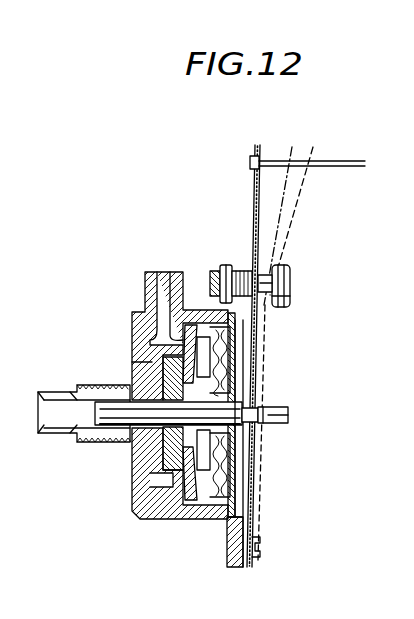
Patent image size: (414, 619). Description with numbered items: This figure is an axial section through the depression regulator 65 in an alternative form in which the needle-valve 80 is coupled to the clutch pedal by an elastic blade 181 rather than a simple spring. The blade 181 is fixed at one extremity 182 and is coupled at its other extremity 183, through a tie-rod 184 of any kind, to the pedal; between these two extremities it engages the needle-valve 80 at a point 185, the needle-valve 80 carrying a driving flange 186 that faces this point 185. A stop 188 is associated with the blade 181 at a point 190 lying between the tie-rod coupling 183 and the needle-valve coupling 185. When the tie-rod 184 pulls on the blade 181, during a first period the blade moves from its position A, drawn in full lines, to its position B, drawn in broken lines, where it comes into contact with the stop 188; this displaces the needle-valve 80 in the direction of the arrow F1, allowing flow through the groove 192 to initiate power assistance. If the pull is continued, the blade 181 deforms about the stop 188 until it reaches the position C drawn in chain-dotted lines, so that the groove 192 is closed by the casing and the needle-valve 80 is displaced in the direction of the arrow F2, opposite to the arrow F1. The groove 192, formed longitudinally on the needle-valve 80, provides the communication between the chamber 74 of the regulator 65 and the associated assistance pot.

The depression regulator 65 is at (137, 520).
The chamber 74 is at (157, 463).
The needle-valve 80 is at (197, 412).
The elastic blade 181 is at (261, 342).
The extremity 182 is at (250, 563).
The extremity 183 is at (254, 176).
The tie-rod 184 is at (348, 163).
The point 185 is at (263, 426).
The driving flange 186 is at (263, 407).
The stop 188 is at (294, 263).
The point 190 is at (264, 292).
The groove 192 is at (120, 405).
The position A is at (257, 146).
The position B is at (292, 147).
The position C is at (313, 147).
The arrow F1 is at (358, 410).
The arrow F2 is at (353, 427).